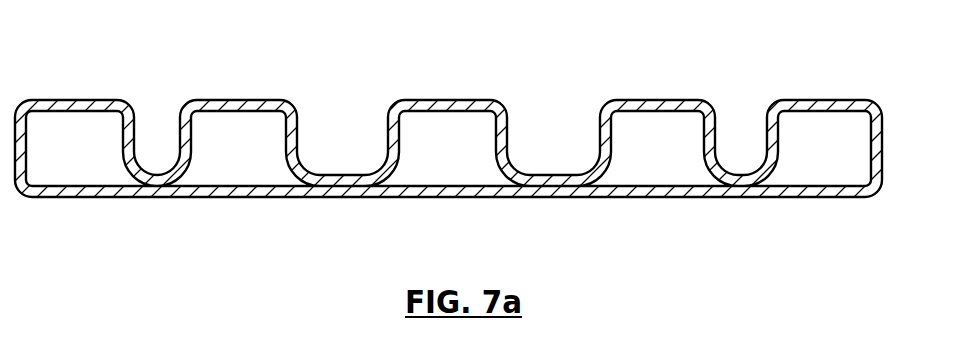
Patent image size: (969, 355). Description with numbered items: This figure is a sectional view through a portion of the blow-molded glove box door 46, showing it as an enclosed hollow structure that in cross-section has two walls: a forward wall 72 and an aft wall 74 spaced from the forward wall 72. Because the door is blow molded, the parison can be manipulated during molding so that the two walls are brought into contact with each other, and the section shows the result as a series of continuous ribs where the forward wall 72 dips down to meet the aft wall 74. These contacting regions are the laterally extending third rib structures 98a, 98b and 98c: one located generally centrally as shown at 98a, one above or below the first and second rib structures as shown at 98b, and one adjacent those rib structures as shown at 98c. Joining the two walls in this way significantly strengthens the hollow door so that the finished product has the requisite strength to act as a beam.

The glove box door 46 is at (848, 99).
The forward wall 72 is at (65, 99).
The aft wall 74 is at (150, 196).
The third rib structure 98a is at (440, 99).
The third rib structure 98b is at (652, 99).
The third rib structure 98c is at (247, 99).